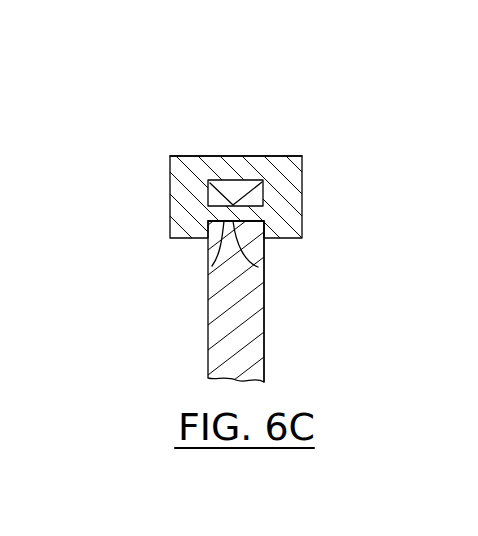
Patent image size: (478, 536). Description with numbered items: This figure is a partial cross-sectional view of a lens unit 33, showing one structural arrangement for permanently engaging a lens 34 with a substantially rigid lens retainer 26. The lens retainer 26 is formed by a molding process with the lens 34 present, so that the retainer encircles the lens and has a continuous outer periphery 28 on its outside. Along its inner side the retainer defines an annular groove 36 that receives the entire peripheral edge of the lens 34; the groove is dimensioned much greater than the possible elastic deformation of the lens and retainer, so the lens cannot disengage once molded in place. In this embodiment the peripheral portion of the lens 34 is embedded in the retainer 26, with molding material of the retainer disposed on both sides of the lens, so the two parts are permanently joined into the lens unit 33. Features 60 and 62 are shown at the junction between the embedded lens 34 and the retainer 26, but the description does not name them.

The lens retainer 26 is at (298, 216).
The outer periphery 28 is at (195, 156).
The annular groove 36 is at (214, 183).
The lens 34 is at (253, 323).
The fillet 60 is at (258, 267).
The fillet 62 is at (212, 266).
The lens unit 33 is at (168, 343).